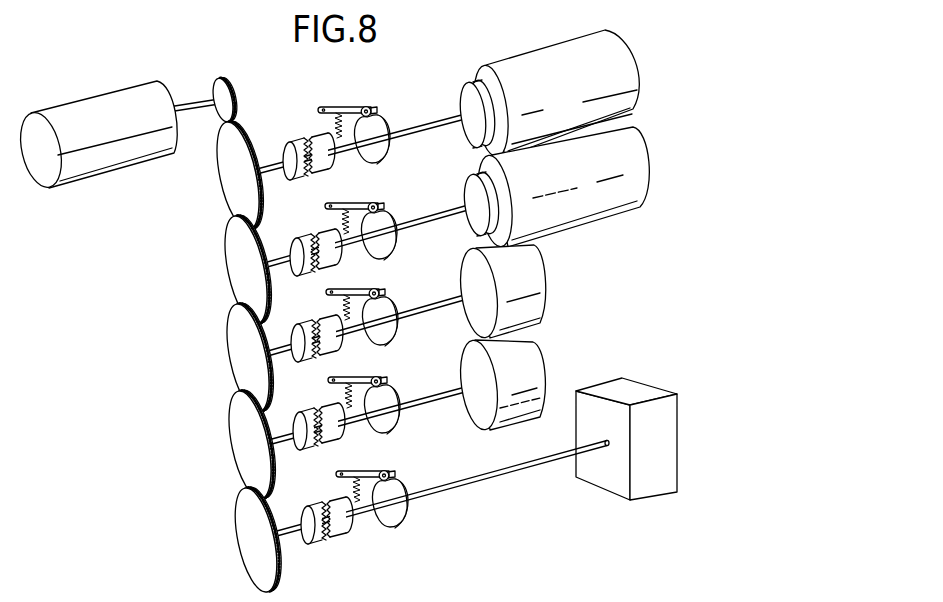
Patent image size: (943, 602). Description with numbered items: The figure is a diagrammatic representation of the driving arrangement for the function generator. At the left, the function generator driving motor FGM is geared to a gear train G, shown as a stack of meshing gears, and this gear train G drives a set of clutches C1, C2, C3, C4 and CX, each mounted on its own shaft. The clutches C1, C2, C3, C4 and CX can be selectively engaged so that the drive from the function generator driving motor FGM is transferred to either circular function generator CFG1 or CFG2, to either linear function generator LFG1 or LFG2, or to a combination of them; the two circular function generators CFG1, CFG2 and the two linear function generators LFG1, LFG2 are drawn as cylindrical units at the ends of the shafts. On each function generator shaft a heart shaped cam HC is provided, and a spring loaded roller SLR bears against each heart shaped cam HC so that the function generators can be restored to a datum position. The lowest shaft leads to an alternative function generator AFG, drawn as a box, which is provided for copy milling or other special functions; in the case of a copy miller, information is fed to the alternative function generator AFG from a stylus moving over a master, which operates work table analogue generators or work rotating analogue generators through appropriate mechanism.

The function generator driving motor FGM is at (95, 106).
The gear train G is at (234, 405).
The clutch C1 is at (294, 148).
The clutch C2 is at (300, 240).
The clutch C3 is at (302, 326).
The clutch C4 is at (302, 413).
The clutch CX is at (346, 522).
The spring loaded roller SLR is at (352, 105).
The heart shaped cam HC is at (388, 151).
The circular function generator CFG1 is at (534, 58).
The circular function generator CFG2 is at (600, 207).
The linear function generator LFG1 is at (537, 274).
The linear function generator LFG2 is at (530, 358).
The alternative function generator AFG is at (612, 480).